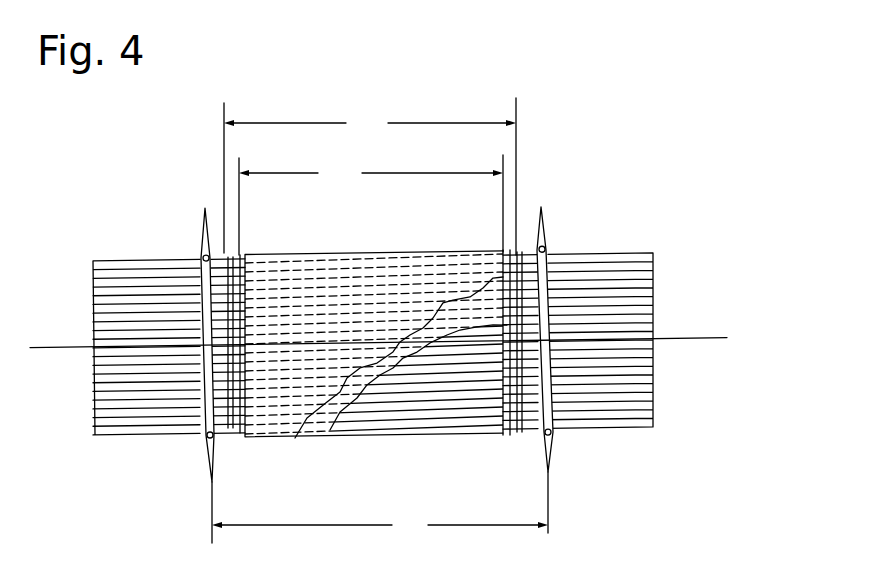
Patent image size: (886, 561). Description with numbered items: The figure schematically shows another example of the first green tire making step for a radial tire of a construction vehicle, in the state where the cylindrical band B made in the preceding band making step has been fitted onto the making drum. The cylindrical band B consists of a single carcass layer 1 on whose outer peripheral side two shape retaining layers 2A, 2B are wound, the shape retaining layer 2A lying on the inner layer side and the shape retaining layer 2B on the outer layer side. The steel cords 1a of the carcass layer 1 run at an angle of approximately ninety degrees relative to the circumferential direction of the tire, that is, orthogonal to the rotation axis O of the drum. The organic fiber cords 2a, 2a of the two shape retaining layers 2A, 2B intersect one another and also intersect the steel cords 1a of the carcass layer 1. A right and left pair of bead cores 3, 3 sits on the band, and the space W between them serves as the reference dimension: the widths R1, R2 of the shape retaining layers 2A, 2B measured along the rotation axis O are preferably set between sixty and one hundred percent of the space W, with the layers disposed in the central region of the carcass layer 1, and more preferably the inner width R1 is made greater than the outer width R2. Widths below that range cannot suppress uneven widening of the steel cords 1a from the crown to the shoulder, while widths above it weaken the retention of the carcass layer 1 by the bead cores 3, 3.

The cylindrical band B is at (655, 176).
The carcass layer 1 is at (598, 250).
The steel cords 1a is at (143, 412).
The shape retaining layer 2A is at (514, 250).
The shape retaining layer 2B is at (445, 250).
The organic fiber cords 2a is at (268, 410).
The bead cores 3 is at (202, 256).
The rotation axis O is at (710, 339).
The width of shape retaining layer 2A R1 is at (370, 176).
The width of shape retaining layer 2B R2 is at (371, 205).
The space between bead cores W is at (380, 507).